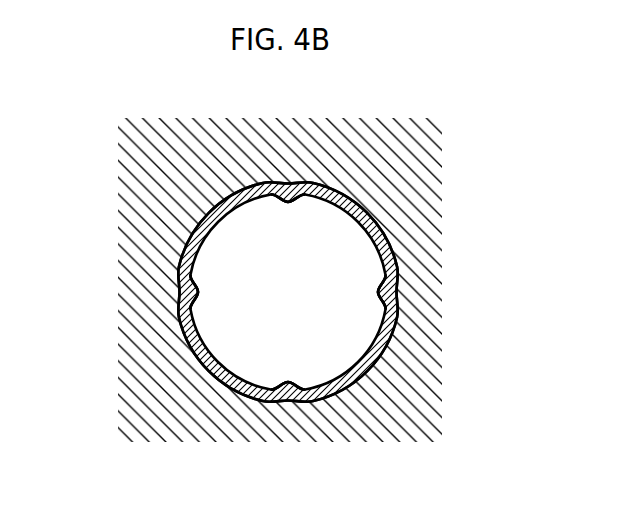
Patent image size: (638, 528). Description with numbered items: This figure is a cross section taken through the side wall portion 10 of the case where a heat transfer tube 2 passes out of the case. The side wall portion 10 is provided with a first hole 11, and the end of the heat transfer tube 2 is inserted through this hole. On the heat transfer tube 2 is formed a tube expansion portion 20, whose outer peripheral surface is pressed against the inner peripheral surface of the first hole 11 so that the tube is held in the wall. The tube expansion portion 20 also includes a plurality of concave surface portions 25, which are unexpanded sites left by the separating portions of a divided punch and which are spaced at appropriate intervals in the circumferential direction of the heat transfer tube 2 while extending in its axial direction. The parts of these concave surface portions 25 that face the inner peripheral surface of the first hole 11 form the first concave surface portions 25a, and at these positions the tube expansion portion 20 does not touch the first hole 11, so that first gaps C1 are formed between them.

The side wall portion 10 is at (136, 183).
The first hole 11 is at (213, 203).
The heat transfer tube 2 is at (207, 224).
The tube expansion portion 20 is at (376, 214).
The concave surface portion 25 is at (300, 186).
The first concave surface portion 25a is at (287, 186).
The first gap C1 is at (281, 185).